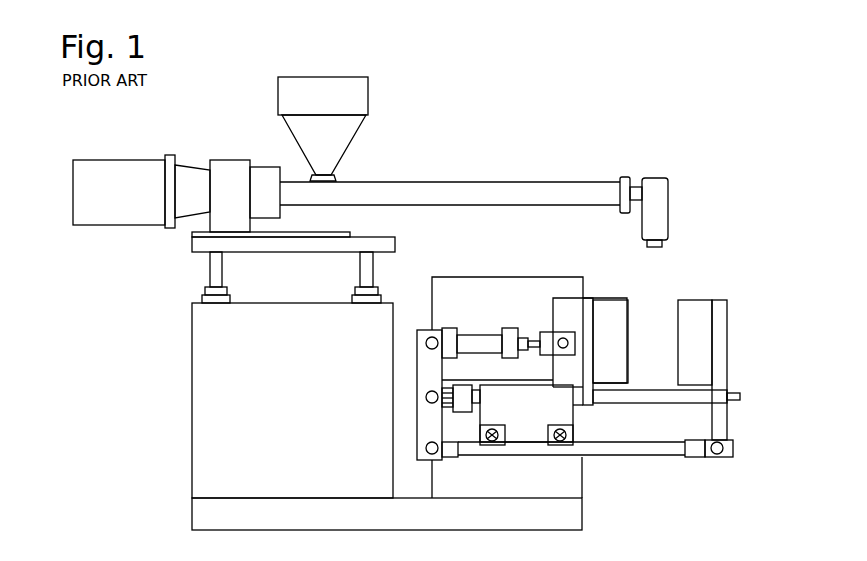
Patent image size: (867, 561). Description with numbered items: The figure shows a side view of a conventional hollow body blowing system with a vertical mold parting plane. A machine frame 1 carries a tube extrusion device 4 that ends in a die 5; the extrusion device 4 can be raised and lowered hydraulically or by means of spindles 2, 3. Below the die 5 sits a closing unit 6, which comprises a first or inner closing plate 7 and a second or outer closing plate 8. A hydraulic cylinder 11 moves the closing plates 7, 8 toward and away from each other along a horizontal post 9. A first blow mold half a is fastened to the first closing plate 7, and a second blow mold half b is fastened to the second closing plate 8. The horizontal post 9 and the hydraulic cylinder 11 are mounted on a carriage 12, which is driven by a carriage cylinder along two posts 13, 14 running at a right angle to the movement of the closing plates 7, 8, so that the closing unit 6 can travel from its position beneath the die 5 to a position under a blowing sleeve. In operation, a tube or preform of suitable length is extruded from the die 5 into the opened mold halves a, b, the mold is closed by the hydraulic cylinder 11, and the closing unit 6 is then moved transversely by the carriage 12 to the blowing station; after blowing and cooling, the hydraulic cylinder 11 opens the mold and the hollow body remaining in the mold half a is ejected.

The machine frame 1 is at (252, 410).
The spindle 2 is at (215, 273).
The spindle 3 is at (366, 275).
The tube extrusion device 4 is at (416, 192).
The die 5 is at (666, 242).
The closing unit 6 is at (643, 470).
The first or inner closing plate 7 is at (590, 303).
The second or outer closing plate 8 is at (722, 305).
The horizontal post 9 is at (658, 397).
The hydraulic cylinder 11 is at (487, 343).
The carriage 12 is at (527, 425).
The post 13 is at (490, 446).
The post 14 is at (562, 446).
The first blow mold half a is at (618, 332).
The second blow mold half b is at (688, 368).